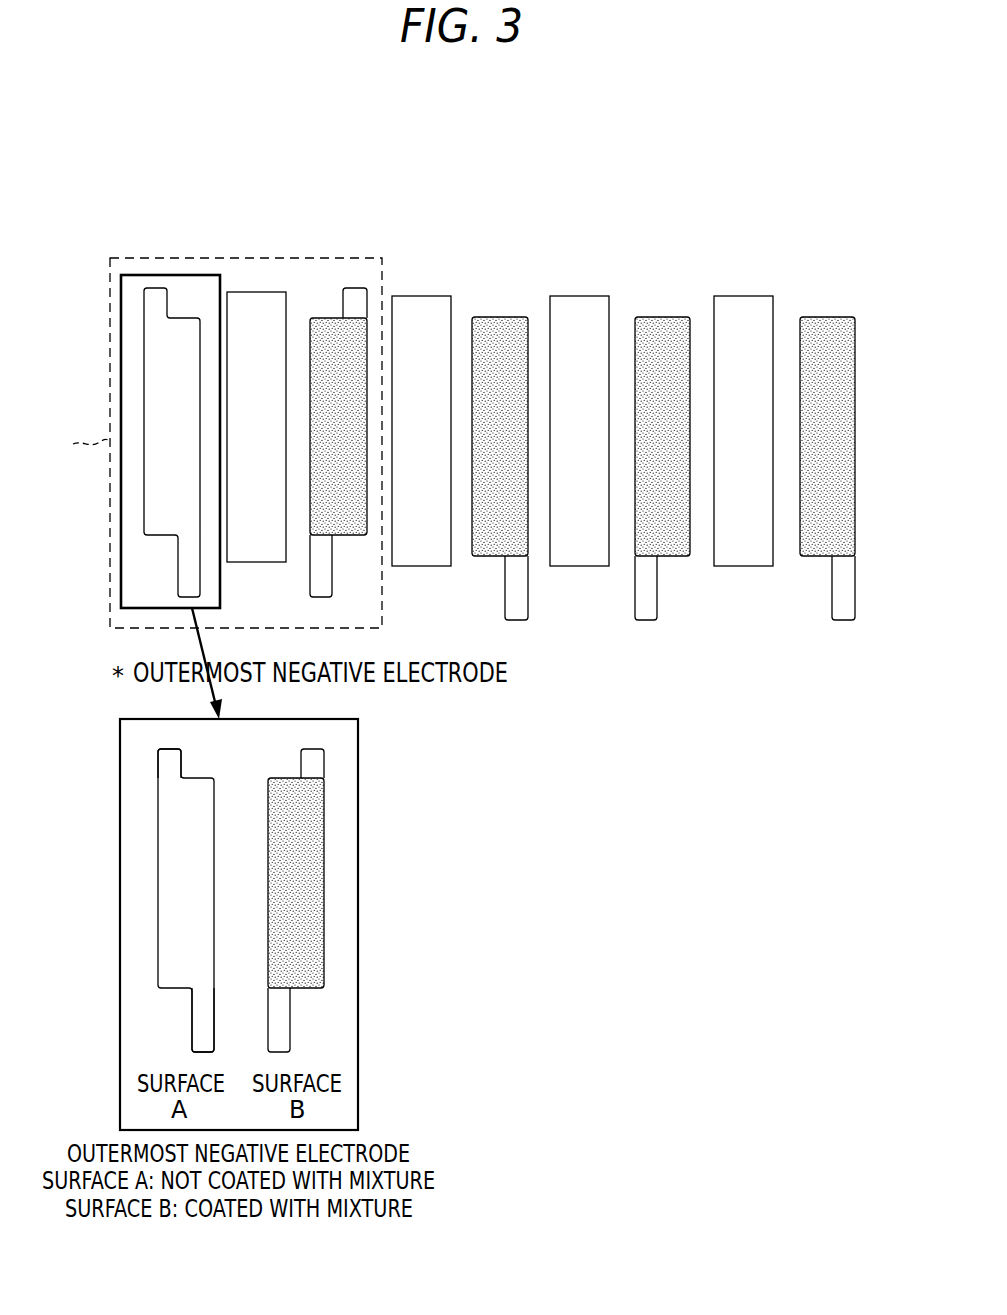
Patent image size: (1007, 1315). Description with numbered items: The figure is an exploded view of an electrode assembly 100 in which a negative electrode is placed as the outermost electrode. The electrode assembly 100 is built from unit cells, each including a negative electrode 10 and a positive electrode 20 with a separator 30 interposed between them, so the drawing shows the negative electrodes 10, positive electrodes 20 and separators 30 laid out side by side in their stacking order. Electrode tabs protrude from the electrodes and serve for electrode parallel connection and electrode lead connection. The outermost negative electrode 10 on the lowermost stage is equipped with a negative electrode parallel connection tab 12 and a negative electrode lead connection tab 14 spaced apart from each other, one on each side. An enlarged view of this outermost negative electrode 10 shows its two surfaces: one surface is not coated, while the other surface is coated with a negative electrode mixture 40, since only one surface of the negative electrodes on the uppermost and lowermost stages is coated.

The electrode assembly 100 is at (214, 144).
The negative electrode 10 is at (183, 342).
The positive electrode 20 is at (340, 342).
The separator 30 is at (257, 335).
The negative electrode parallel connection tab 12 is at (209, 1028).
The negative electrode lead connection tab 14 is at (172, 768).
The negative electrode mixture 40 is at (302, 885).